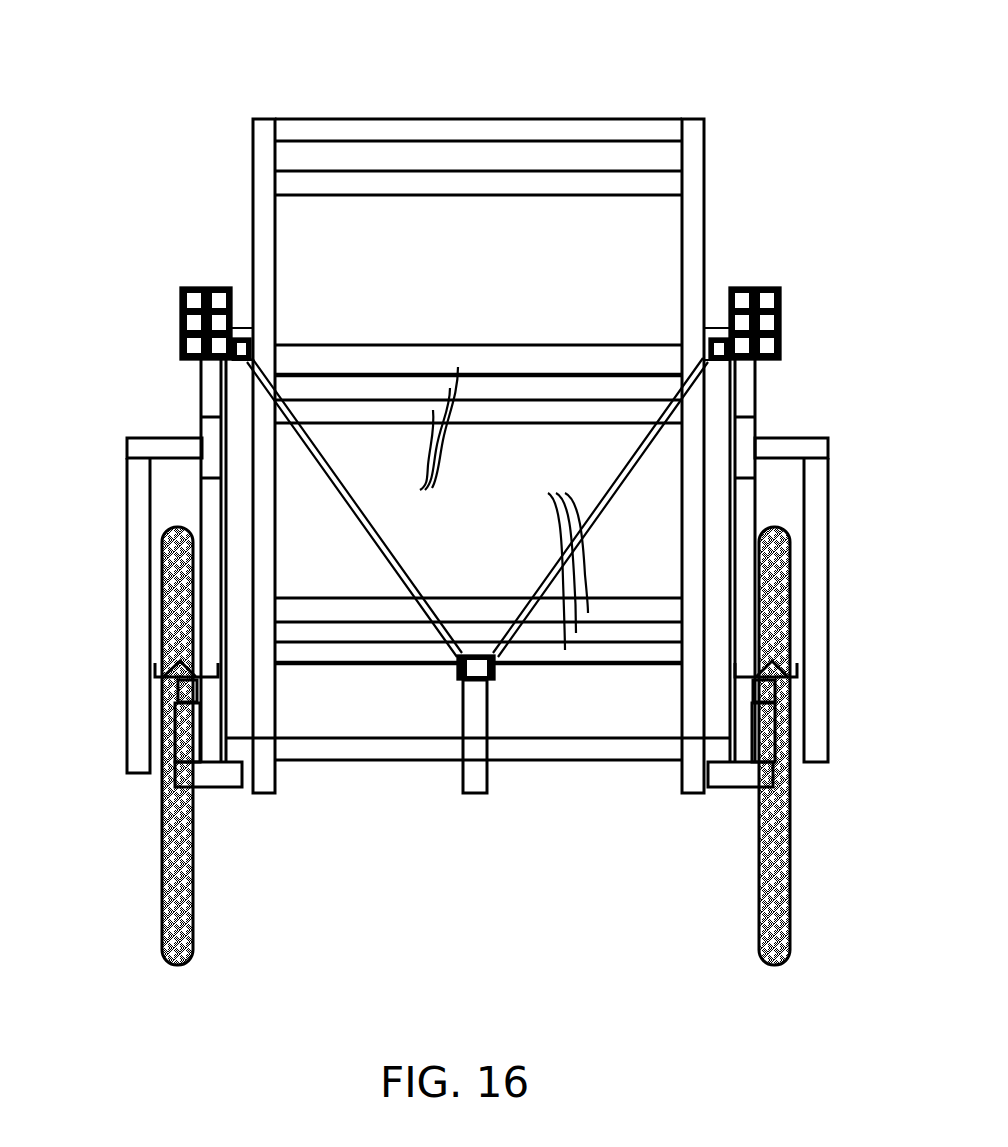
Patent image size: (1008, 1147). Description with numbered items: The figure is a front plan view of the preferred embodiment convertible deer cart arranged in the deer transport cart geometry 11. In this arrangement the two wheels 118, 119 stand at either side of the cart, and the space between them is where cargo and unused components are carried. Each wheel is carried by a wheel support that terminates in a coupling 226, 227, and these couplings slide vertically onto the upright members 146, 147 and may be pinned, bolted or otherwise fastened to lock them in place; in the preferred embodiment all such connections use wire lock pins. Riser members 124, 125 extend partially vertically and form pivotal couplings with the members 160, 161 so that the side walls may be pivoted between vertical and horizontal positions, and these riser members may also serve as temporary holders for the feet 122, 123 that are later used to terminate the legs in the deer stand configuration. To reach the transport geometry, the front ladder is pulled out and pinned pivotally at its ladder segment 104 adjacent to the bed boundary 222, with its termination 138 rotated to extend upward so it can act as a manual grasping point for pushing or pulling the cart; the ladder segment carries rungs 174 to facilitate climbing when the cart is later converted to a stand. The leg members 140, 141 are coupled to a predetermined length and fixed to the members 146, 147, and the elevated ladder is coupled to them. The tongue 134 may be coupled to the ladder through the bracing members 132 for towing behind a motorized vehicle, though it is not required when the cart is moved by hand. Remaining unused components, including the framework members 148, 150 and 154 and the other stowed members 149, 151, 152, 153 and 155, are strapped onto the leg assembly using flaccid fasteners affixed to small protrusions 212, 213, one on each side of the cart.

The deer transport cart geometry 11 is at (472, 484).
The ladder segment 104 is at (688, 548).
The wheel 118 is at (762, 915).
The wheel 119 is at (193, 888).
The foot 122 is at (797, 663).
The foot 123 is at (155, 662).
The riser member 124 is at (770, 750).
The riser member 125 is at (187, 750).
The bracing members 132 is at (545, 577).
The tongue 134 is at (482, 680).
The termination 138 is at (693, 150).
The leg member 140 is at (752, 362).
The leg member 141 is at (208, 362).
The member 146 is at (752, 390).
The member 147 is at (205, 388).
The framework member 148 is at (776, 300).
The member 149 is at (188, 299).
The framework member 150 is at (776, 325).
The member 151 is at (188, 324).
The member 152 is at (742, 290).
The member 153 is at (217, 290).
The framework member 154 is at (728, 328).
The member 155 is at (236, 328).
The member 160 is at (740, 788).
The member 161 is at (222, 788).
The rungs 174 is at (548, 493).
The small protrusion 212 is at (776, 352).
The protrusion 213 is at (188, 350).
The bed boundary 222 is at (397, 762).
The coupling 226 is at (756, 434).
The coupling 227 is at (200, 432).